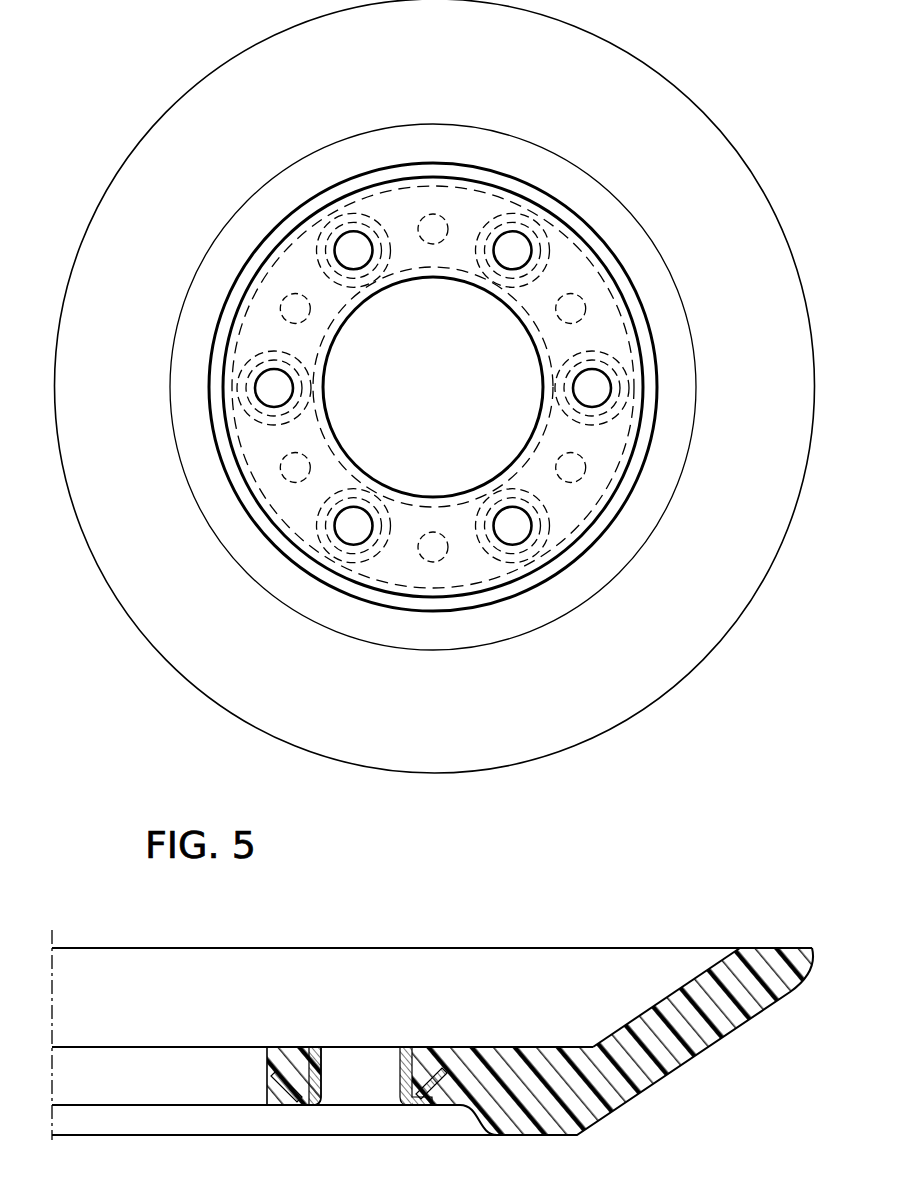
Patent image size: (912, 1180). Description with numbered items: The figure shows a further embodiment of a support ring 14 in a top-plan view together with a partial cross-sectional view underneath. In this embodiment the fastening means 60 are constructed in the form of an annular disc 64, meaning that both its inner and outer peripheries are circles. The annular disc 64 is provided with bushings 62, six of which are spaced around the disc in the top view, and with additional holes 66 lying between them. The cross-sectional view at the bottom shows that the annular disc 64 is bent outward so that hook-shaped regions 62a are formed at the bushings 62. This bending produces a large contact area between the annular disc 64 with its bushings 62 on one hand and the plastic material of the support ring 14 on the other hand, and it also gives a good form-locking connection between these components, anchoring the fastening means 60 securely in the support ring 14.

The support ring 14 is at (681, 122).
The fastening means 60 is at (624, 322).
The bushings 62 is at (347, 242).
The hook-shaped regions 62a is at (290, 1105).
The annular disc 64 is at (583, 503).
The additional holes 66 is at (440, 217).